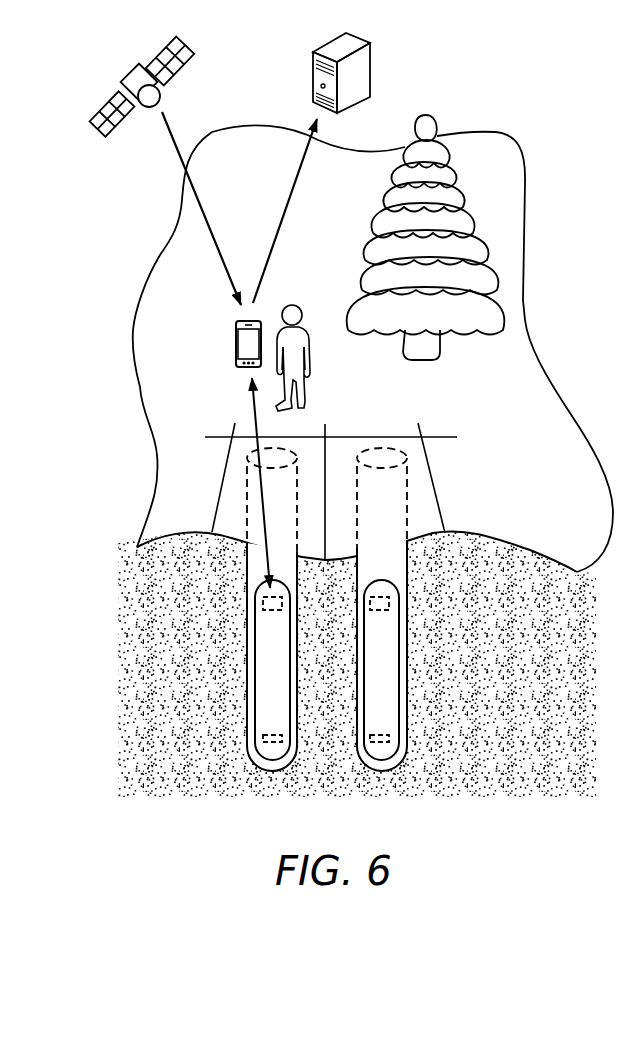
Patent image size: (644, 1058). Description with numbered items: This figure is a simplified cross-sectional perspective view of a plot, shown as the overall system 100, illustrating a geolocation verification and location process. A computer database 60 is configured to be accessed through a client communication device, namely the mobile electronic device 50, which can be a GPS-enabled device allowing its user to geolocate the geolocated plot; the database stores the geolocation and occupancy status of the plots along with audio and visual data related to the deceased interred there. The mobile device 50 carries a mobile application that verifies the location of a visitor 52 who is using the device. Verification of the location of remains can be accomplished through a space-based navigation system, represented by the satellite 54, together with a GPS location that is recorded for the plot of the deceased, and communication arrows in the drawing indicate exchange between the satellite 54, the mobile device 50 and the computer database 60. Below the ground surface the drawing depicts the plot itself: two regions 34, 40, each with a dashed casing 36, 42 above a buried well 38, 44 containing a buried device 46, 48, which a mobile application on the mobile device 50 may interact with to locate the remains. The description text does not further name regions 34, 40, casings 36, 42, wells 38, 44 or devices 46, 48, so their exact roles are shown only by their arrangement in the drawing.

The monitoring system 100 is at (98, 244).
The first region 34 is at (230, 488).
The first well casing 36 is at (288, 455).
The first well 38 is at (277, 705).
The second region 40 is at (427, 495).
The second well casing 42 is at (377, 450).
The second well 44 is at (387, 707).
The first sensor 46 is at (272, 612).
The second sensor 48 is at (380, 612).
The mobile electronic device 50 is at (235, 338).
The visitor 52 is at (305, 337).
The satellite 54 is at (130, 72).
The computer database 60 is at (355, 43).